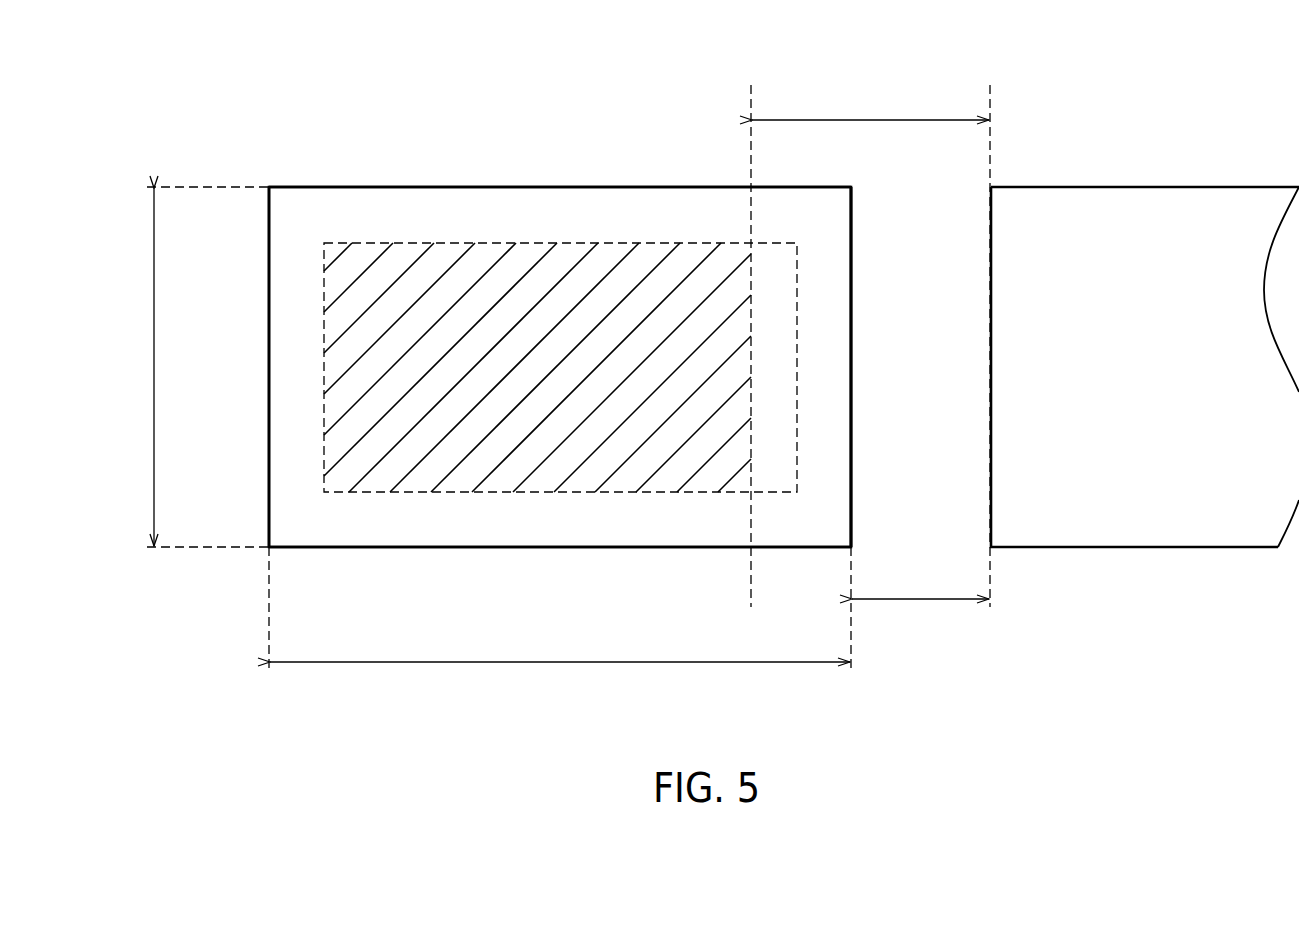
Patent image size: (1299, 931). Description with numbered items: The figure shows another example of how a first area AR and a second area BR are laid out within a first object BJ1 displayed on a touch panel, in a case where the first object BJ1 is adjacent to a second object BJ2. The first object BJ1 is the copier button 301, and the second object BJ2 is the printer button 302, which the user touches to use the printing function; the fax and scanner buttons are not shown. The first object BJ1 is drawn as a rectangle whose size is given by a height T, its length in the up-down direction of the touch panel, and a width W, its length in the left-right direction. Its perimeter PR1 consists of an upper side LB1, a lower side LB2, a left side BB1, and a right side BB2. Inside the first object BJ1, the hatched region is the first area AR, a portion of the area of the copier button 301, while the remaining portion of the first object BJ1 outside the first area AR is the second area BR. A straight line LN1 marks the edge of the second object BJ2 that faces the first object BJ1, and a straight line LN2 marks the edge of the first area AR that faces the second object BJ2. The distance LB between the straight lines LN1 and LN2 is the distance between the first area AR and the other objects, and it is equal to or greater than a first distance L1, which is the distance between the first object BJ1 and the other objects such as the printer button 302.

The copier button 301 is at (578, 178).
The first object BJ1 is at (560, 314).
The printer button 302 is at (1140, 187).
The second object BJ2 is at (1145, 319).
The first area AR is at (481, 460).
The perimeter PR1 is at (854, 231).
The upper side LB1 is at (350, 187).
The lower side LB2 is at (369, 547).
The left side BB1 is at (269, 450).
The right side BB2 is at (851, 450).
The second area BR is at (796, 535).
The straight line LN1 is at (992, 326).
The straight line LN2 is at (751, 326).
The distance LB is at (870, 102).
The first distance L1 is at (920, 617).
The width W is at (560, 624).
The height T is at (199, 367).